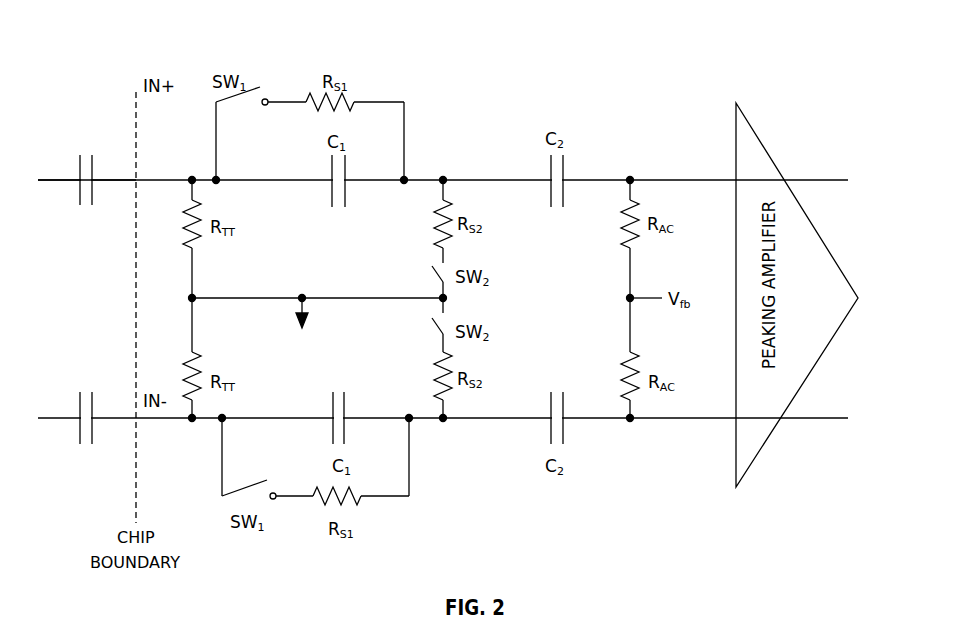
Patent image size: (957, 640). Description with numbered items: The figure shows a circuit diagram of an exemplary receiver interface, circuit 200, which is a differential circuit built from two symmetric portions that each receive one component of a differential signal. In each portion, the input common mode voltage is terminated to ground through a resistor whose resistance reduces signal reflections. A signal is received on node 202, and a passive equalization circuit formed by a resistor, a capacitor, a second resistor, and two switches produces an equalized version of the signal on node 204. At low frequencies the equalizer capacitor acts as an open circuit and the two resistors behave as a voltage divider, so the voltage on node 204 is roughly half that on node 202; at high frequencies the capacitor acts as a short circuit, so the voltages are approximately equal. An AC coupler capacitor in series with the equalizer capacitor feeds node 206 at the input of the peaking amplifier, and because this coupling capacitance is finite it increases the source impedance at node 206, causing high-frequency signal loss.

The circuit 200 is at (130, 28).
The node 202 is at (215, 177).
The node 204 is at (443, 177).
The node 206 is at (630, 177).